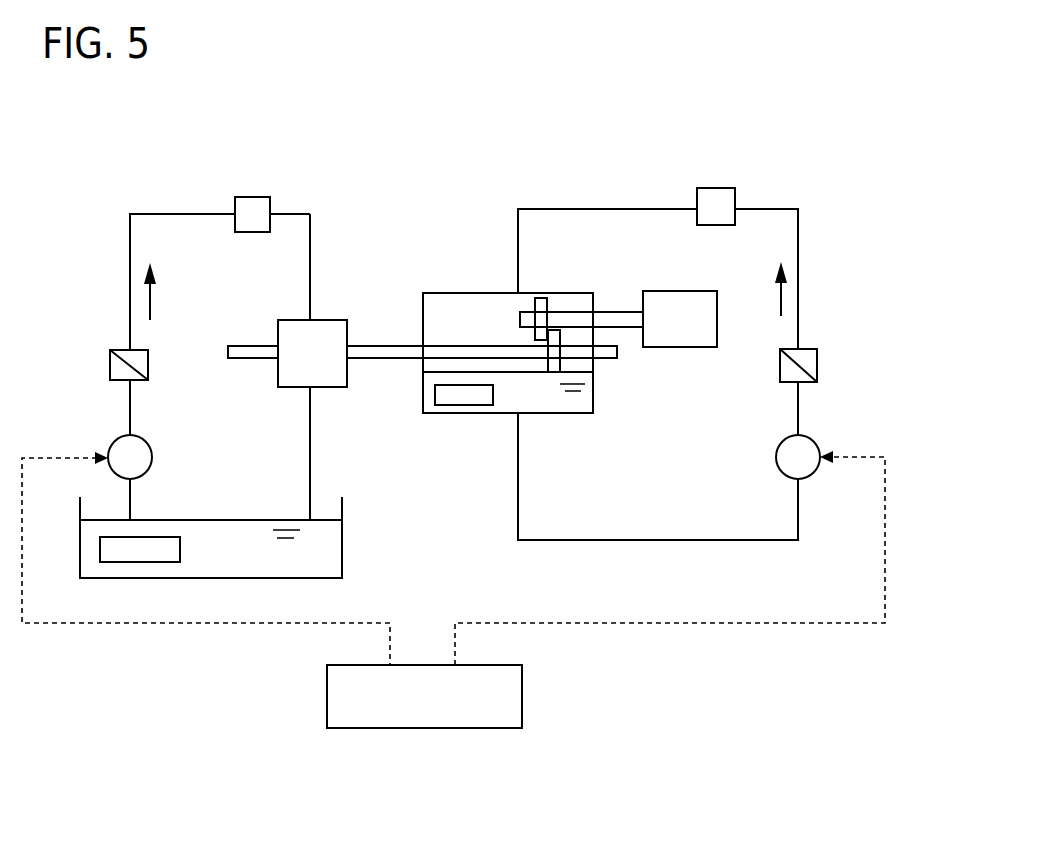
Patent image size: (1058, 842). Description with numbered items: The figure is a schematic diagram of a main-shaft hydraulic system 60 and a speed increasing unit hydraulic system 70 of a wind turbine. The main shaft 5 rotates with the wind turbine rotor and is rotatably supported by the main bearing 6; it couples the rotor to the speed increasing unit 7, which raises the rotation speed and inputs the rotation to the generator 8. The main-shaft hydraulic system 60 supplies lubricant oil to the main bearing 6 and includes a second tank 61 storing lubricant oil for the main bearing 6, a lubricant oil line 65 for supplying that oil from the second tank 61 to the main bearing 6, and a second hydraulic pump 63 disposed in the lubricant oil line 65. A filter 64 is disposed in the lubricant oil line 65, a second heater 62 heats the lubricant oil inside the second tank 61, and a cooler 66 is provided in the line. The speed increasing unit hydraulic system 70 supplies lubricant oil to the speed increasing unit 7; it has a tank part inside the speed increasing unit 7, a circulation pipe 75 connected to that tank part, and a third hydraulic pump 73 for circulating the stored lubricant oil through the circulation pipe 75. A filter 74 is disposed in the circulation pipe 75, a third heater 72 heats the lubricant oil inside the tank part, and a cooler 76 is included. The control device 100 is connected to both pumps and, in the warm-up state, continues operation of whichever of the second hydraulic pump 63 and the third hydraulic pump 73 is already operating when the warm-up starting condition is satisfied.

The main shaft 5 is at (386, 359).
The main bearing 6 is at (328, 320).
The speed increasing unit 7 is at (466, 293).
The generator 8 is at (673, 291).
The main-shaft hydraulic system 60 is at (140, 181).
The second tank 61 is at (343, 530).
The second heater 62 is at (168, 536).
The second hydraulic pump 63 is at (114, 442).
The filter 64 is at (110, 365).
The lubricant oil line 65 is at (190, 213).
The cooler 66 is at (255, 197).
The speed increasing unit hydraulic system 70 is at (771, 168).
The third heater 72 is at (467, 406).
The third hydraulic pump 73 is at (818, 442).
The filter 74 is at (817, 363).
The circulation pipe 75 is at (614, 208).
The cooler 76 is at (717, 188).
The control device 100 is at (400, 730).